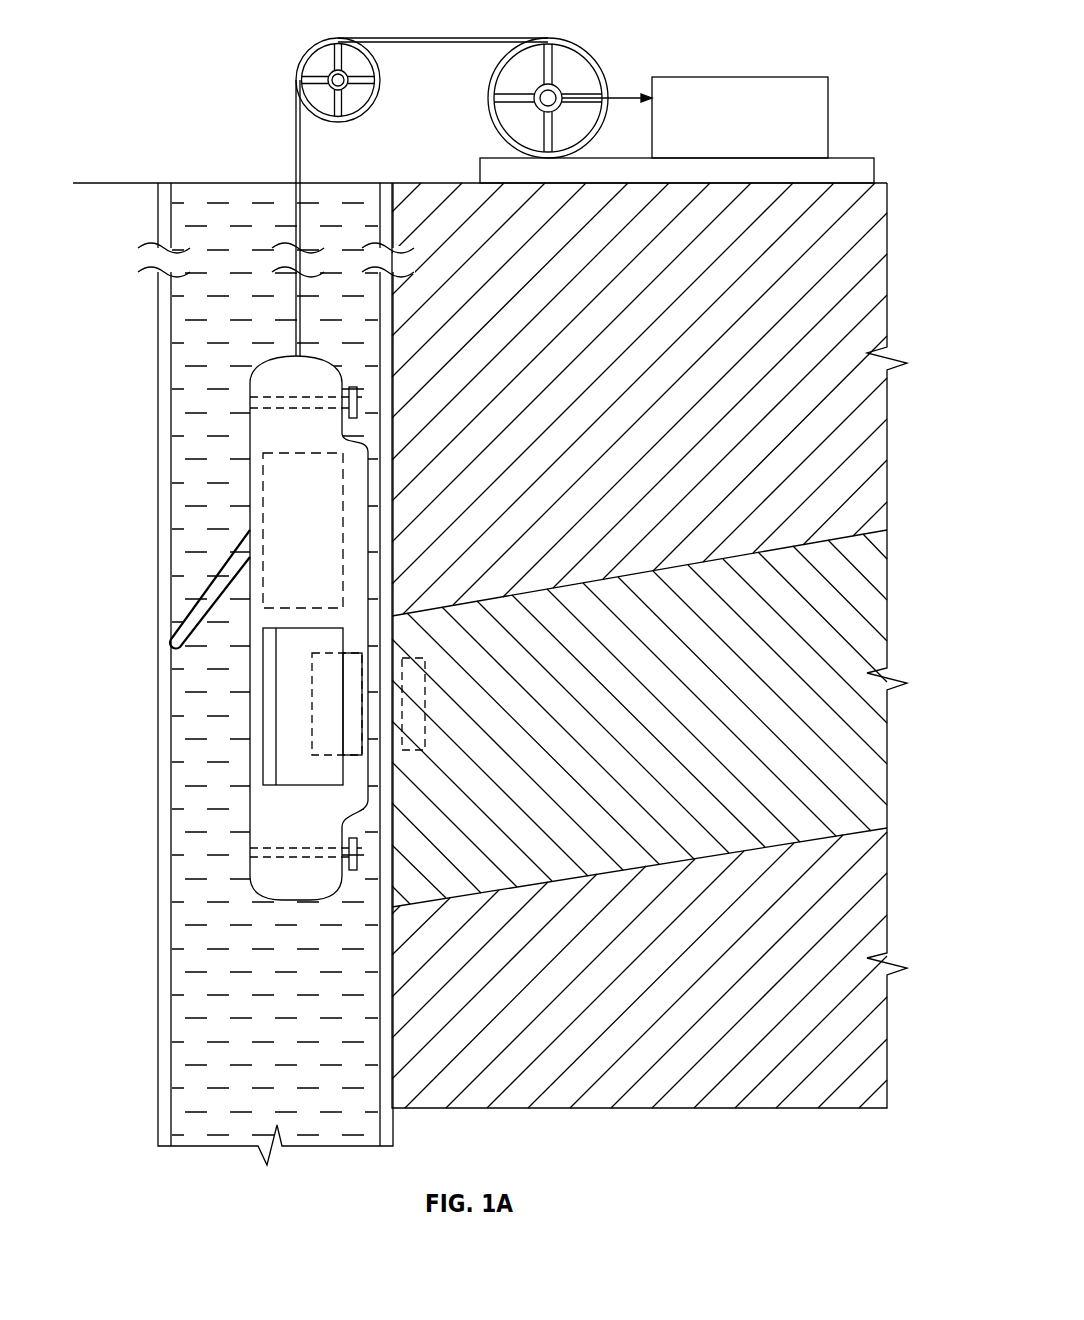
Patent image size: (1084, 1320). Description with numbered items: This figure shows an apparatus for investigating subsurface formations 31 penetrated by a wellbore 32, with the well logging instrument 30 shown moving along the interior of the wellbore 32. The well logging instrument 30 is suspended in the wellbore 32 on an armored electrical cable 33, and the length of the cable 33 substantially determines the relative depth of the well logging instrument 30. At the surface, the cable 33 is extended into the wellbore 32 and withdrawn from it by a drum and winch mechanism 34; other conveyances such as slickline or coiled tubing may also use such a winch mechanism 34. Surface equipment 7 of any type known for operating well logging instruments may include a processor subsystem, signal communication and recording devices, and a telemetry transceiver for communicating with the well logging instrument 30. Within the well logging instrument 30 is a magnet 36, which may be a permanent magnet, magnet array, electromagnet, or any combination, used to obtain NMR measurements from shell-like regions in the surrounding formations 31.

The surface equipment 7 is at (731, 129).
The well logging instrument 30 is at (250, 622).
The subsurface formations 31 is at (845, 183).
The wellbore 32 is at (200, 331).
The armored electrical cable 33 is at (292, 143).
The drum and winch mechanism 34 is at (578, 46).
The magnet 36 is at (291, 545).